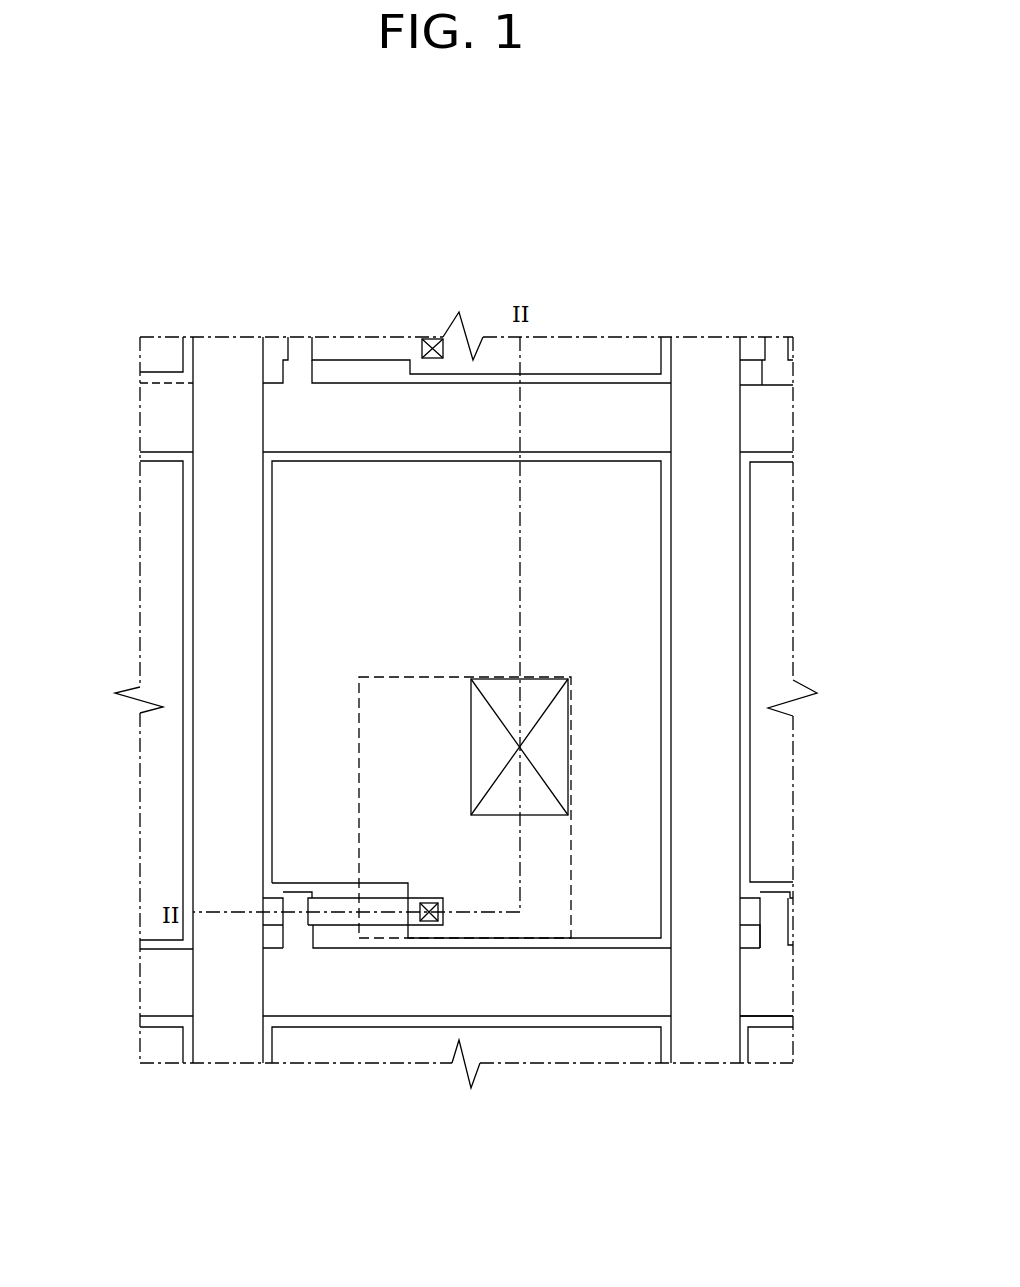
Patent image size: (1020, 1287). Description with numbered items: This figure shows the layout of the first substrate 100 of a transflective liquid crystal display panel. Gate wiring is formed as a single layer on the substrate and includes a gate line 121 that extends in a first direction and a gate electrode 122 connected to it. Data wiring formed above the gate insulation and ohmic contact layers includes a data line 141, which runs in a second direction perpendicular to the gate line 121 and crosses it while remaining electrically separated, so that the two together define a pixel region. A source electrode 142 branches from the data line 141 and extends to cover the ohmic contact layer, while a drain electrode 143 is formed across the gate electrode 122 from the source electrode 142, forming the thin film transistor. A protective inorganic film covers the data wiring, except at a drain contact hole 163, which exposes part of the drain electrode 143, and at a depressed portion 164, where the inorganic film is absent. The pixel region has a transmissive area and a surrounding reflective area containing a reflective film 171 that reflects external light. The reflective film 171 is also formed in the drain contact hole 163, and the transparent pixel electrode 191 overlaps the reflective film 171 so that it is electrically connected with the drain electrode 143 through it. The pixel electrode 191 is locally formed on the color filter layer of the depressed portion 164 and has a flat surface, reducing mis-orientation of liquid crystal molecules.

The first substrate 100 is at (128, 253).
The gate line 121 is at (443, 1000).
The gate electrode 122 is at (302, 942).
The data line 141 is at (213, 800).
The source electrode 142 is at (273, 913).
The drain electrode 143 is at (393, 903).
The drain contact hole 163 is at (433, 899).
The depressed portion 164 is at (570, 778).
The reflective film 171 is at (273, 617).
The pixel electrode 191 is at (572, 843).